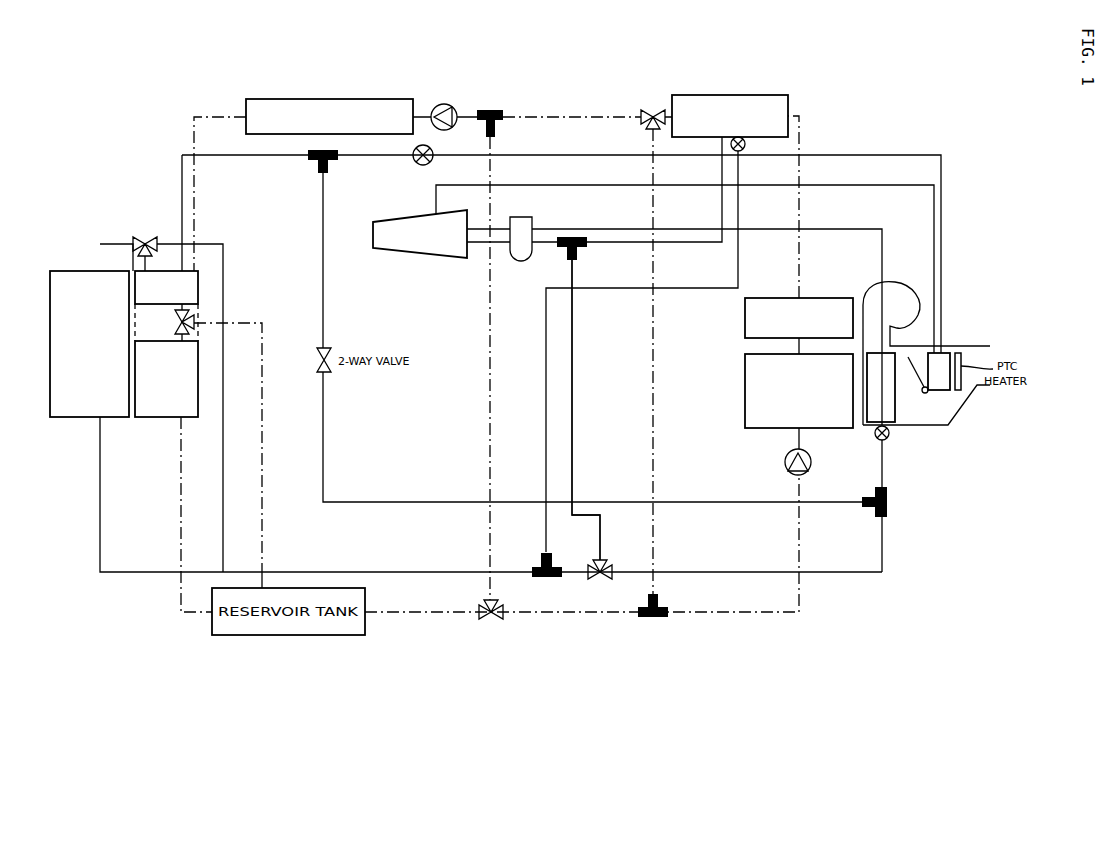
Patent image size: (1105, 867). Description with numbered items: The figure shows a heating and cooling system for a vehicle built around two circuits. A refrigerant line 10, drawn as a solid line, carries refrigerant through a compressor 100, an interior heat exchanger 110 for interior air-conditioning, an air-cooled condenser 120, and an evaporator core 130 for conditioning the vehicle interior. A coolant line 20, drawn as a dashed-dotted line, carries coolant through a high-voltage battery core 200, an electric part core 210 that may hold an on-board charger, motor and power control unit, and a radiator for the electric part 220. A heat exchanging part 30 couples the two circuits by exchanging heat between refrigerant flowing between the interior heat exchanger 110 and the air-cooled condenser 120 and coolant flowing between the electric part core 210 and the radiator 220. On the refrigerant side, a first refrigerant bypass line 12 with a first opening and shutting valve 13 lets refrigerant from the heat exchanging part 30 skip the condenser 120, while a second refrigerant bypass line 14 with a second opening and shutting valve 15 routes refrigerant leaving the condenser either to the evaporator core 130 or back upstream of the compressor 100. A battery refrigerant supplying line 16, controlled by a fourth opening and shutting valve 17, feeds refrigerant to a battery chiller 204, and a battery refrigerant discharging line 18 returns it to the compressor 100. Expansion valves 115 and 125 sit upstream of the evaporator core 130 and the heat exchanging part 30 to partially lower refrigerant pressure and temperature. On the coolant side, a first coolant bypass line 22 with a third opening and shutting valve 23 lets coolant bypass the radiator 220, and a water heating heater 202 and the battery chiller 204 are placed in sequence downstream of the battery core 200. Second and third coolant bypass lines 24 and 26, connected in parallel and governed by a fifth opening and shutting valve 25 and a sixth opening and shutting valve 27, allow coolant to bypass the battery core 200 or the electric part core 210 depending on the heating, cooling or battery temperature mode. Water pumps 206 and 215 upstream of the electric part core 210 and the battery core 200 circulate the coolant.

The refrigerant line 10 is at (880, 153).
The first refrigerant bypass line 12 is at (222, 242).
The first opening and shutting valve 13 is at (140, 236).
The second refrigerant bypass line 14 is at (586, 512).
The second opening and shutting valve 15 is at (596, 583).
The battery refrigerant supplying line 16 is at (737, 258).
The fourth opening and shutting valve 17 is at (745, 146).
The battery refrigerant discharging line 18 is at (721, 199).
The coolant line 20 is at (745, 614).
The first coolant bypass line 22 is at (261, 535).
The third opening and shutting valve 23 is at (200, 318).
The second coolant bypass line 24 is at (490, 532).
The fifth opening and shutting valve 25 is at (485, 620).
The third coolant bypass line 26 is at (655, 540).
The sixth opening and shutting valve 27 is at (653, 106).
The heat exchanging part 30 is at (200, 280).
The compressor 100 is at (435, 259).
The interior heat exchanger 110 is at (945, 353).
The expansion valve 115 is at (415, 162).
The air-cooled condenser 120 is at (90, 270).
The expansion valve 125 is at (888, 438).
The evaporator core 130 is at (896, 413).
The high-voltage battery core 200 is at (745, 388).
The water heating heater 202 is at (745, 323).
The battery chiller 204 is at (728, 95).
The water pump 206 is at (785, 462).
The electric part core 210 is at (383, 98).
The water pump 215 is at (444, 104).
The radiator for the electric part 220 is at (170, 418).